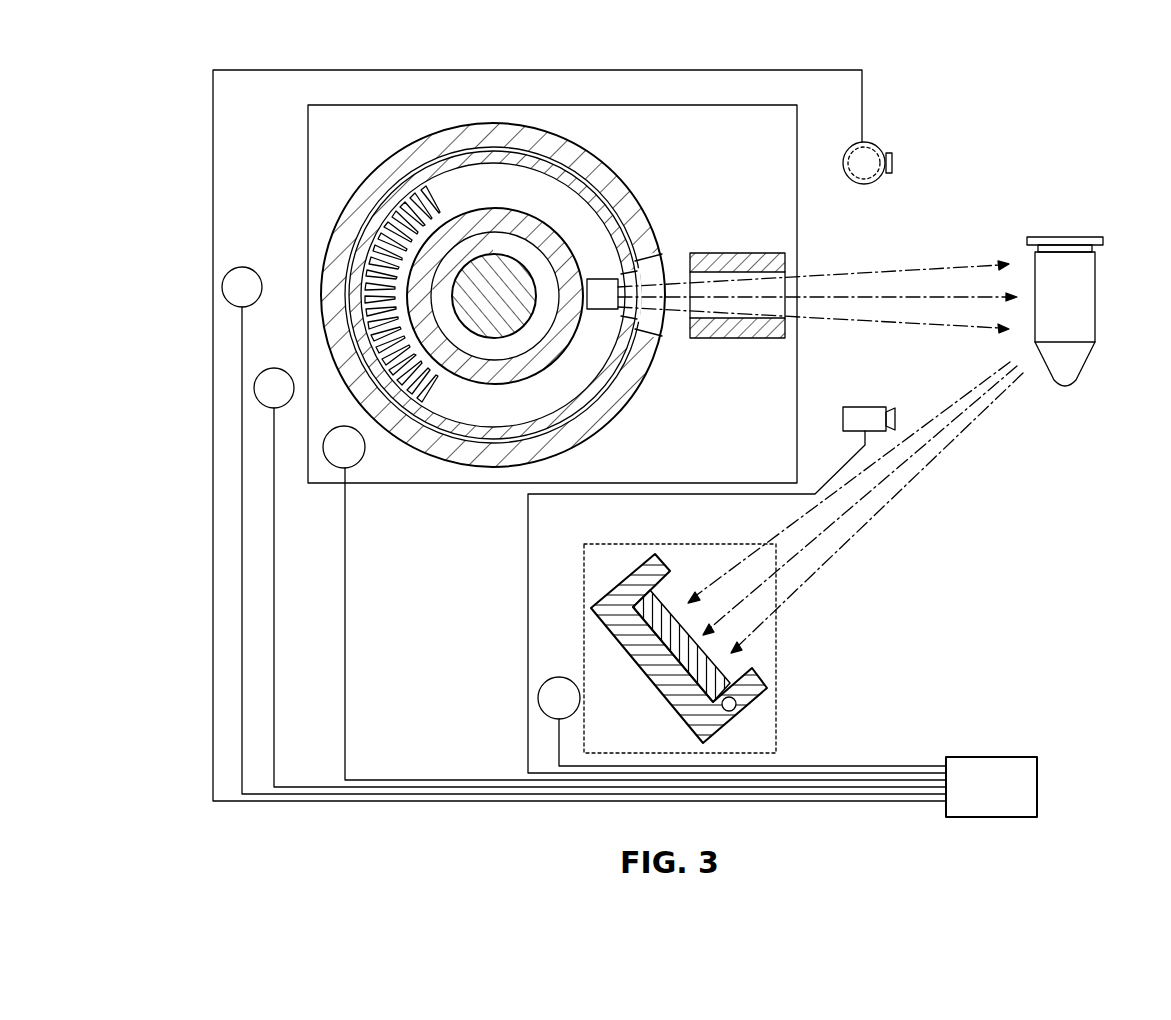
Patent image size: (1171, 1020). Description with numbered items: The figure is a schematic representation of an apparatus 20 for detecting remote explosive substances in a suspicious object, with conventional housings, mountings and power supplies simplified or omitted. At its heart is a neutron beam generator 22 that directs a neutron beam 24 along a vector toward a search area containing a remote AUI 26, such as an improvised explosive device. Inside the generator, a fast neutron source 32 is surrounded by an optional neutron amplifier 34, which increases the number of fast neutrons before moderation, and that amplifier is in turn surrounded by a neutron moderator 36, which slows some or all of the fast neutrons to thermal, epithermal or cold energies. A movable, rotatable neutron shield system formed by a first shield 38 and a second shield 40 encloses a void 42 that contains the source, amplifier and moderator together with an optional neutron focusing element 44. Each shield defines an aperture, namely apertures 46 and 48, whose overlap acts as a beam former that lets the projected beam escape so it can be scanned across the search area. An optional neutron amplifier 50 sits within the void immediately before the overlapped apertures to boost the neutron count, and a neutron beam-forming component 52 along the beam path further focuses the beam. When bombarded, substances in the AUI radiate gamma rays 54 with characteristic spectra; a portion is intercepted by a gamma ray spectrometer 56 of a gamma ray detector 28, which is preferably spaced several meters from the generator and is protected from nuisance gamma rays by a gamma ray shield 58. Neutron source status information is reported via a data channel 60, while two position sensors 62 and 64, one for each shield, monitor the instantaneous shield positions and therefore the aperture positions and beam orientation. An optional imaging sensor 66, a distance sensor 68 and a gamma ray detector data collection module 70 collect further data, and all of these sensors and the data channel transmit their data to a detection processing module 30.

The apparatus 20 is at (1004, 145).
The neutron beam generator 22 is at (383, 160).
The neutron beam 24 is at (940, 322).
The AUI 26 is at (1097, 270).
The gamma ray detector 28 is at (778, 690).
The detection processing module 30 is at (1037, 783).
The fast neutron source 32 is at (484, 328).
The neutron amplifier 34 is at (494, 233).
The neutron moderator 36 is at (576, 346).
The neutron shield 38 is at (578, 164).
The neutron shield 40 is at (636, 184).
The void 42 is at (563, 212).
The neutron focusing element 44 is at (426, 390).
The aperture 46 is at (640, 320).
The aperture 48 is at (660, 262).
The neutron amplifier 50 is at (607, 278).
The neutron beam-forming component 52 is at (728, 253).
The gamma rays 54 is at (863, 472).
The gamma ray spectrometer 56 is at (728, 672).
The gamma ray shield 58 is at (636, 595).
The data channel 60 is at (338, 470).
The position sensor 62 is at (270, 368).
The position sensor 64 is at (242, 267).
The imaging sensor 66 is at (865, 407).
The distance sensor 68 is at (868, 142).
The gamma ray detector data collection module 70 is at (546, 693).